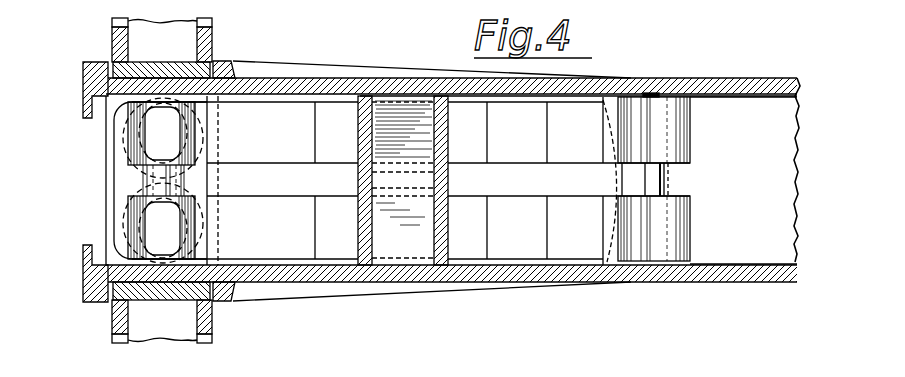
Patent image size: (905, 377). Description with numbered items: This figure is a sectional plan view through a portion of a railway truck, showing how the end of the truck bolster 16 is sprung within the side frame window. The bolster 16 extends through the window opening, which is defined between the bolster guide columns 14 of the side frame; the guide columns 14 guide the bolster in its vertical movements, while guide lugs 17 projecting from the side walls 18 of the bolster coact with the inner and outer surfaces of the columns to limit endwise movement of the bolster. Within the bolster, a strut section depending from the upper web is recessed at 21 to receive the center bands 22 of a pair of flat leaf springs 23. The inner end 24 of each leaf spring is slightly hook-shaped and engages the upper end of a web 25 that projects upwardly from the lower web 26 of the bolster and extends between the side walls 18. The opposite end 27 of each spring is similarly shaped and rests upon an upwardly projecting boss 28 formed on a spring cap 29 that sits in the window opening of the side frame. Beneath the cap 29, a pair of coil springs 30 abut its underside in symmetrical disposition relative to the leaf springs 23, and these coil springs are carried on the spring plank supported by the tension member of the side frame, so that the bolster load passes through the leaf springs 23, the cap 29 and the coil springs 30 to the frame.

The bolster guide columns 14 is at (112, 40).
The truck bolster 16 is at (755, 54).
The guide lugs 17 is at (90, 62).
The side walls 18 is at (302, 78).
The recess 21 is at (360, 222).
The center bands 22 is at (372, 178).
The leaf springs 23 is at (477, 155).
The inner end 24 is at (678, 145).
The web 25 is at (650, 175).
The lower web 26 is at (770, 241).
The opposite end 27 is at (135, 210).
The boss 28 is at (142, 177).
The spring cap 29 is at (117, 188).
The coil springs 30 is at (120, 138).